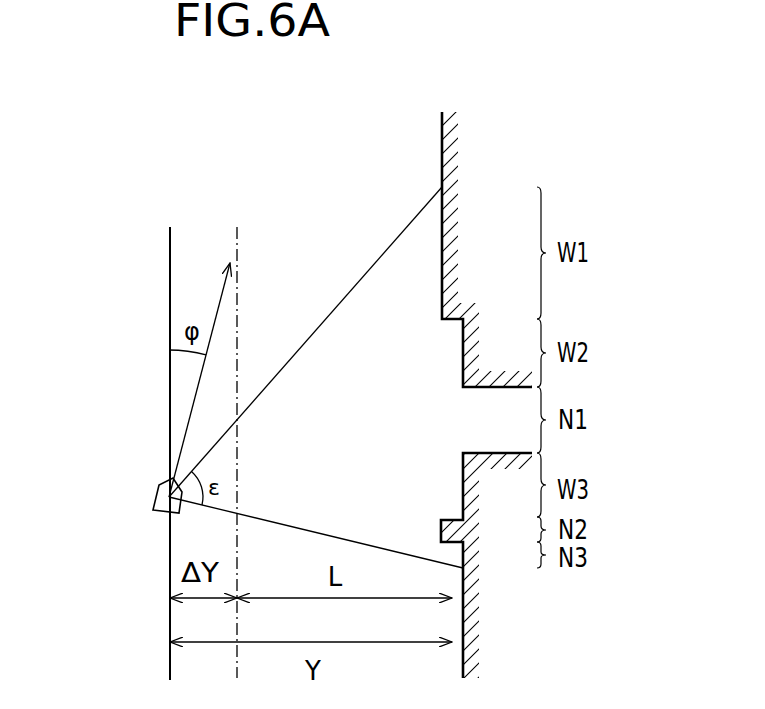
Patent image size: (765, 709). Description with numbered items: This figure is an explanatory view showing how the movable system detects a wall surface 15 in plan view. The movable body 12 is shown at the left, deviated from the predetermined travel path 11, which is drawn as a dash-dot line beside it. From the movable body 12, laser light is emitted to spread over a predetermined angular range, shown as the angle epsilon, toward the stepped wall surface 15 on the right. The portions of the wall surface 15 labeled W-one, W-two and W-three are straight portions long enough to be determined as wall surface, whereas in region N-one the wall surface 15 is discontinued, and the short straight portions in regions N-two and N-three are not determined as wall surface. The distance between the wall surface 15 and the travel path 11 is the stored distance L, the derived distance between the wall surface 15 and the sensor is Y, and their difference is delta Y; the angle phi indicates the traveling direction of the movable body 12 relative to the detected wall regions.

The travel path 11 is at (237, 257).
The movable body 12 is at (160, 492).
The wall surface 15 is at (442, 160).